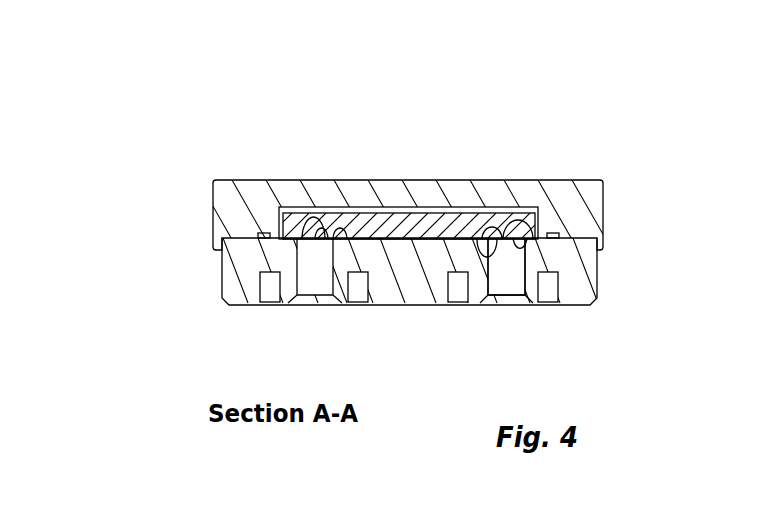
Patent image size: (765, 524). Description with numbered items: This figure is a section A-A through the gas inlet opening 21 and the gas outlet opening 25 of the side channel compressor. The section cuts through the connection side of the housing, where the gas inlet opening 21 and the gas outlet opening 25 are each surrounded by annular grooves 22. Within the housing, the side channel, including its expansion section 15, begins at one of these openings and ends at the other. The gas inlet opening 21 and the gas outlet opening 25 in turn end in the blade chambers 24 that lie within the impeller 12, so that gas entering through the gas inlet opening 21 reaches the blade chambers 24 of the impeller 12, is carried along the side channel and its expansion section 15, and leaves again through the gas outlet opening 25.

The impeller 12 is at (389, 214).
The expansion section 15 is at (487, 256).
The gas inlet opening 21 is at (318, 283).
The annular grooves 22 is at (358, 288).
The blade chamber 24 is at (306, 238).
The gas outlet opening 25 is at (510, 270).